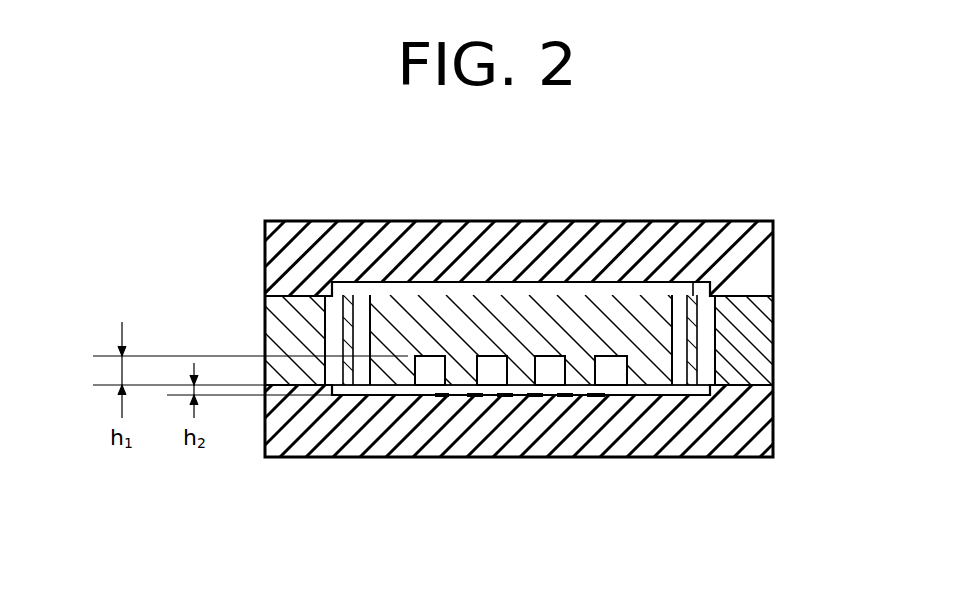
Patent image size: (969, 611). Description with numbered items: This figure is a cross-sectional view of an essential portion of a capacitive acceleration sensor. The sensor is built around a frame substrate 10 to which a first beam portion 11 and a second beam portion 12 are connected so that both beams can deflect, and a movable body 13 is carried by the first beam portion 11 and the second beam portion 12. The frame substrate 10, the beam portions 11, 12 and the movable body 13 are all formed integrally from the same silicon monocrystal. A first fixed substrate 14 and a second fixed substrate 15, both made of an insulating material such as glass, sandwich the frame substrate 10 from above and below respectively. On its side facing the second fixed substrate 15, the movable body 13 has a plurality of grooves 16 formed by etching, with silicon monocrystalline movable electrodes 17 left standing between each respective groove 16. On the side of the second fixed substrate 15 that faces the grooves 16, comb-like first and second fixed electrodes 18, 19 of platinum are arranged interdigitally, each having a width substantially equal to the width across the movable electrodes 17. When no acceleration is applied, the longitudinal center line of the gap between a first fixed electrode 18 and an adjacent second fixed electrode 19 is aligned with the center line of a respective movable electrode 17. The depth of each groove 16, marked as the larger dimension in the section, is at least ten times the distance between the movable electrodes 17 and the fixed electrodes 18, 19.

The frame substrate 10 is at (745, 330).
The first beam portion 11 is at (345, 320).
The second beam portion 12 is at (690, 286).
The movable body 13 is at (530, 310).
The first fixed substrate 14 is at (387, 221).
The second fixed substrate 15 is at (352, 432).
The grooves 16 is at (425, 368).
The movable electrodes 17 is at (456, 397).
The first fixed electrodes 18 is at (432, 396).
The second fixed electrodes 19 is at (460, 373).